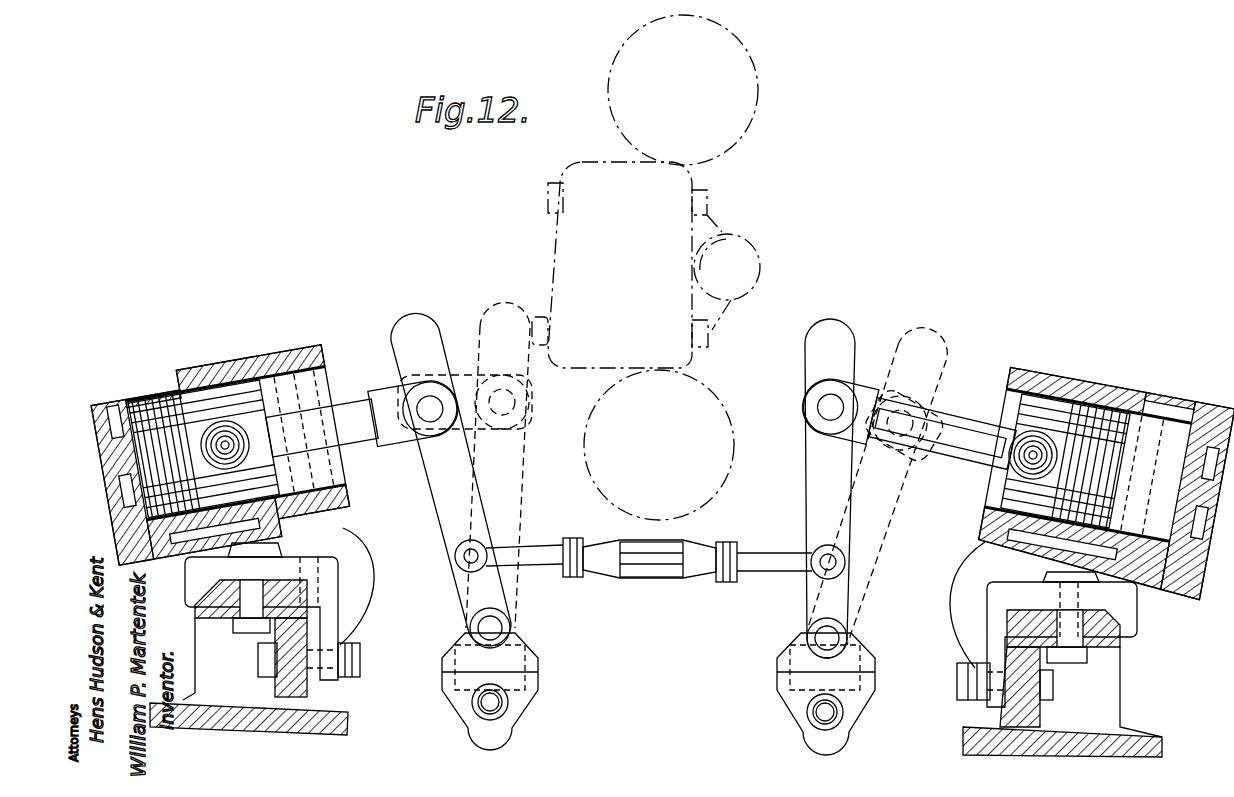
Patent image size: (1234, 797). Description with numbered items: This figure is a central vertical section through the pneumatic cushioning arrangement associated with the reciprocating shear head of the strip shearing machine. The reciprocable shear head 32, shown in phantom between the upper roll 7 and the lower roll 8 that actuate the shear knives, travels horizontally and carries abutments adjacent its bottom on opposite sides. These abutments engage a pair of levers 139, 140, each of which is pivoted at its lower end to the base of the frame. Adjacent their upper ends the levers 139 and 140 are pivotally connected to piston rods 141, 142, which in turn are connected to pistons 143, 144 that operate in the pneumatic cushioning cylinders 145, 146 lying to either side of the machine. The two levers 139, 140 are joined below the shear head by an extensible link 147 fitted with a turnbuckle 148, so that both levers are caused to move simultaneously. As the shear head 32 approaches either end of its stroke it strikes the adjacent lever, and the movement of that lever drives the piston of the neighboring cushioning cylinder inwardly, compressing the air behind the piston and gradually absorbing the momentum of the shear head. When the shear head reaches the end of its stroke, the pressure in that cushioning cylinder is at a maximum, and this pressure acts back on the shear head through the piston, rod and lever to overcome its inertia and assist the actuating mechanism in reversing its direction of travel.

The roll 7 is at (760, 88).
The roll 8 is at (707, 393).
The reciprocable shear head 32 is at (553, 252).
The lever 139 is at (437, 495).
The lever 140 is at (808, 482).
The piston rod 141 is at (355, 400).
The piston rod 142 is at (943, 420).
The piston 143 is at (233, 408).
The piston 144 is at (1057, 408).
The pneumatic cushioning cylinder 145 is at (162, 362).
The pneumatic cushioning cylinder 146 is at (1160, 385).
The extensible link 147 is at (780, 568).
The turnbuckle 148 is at (667, 580).